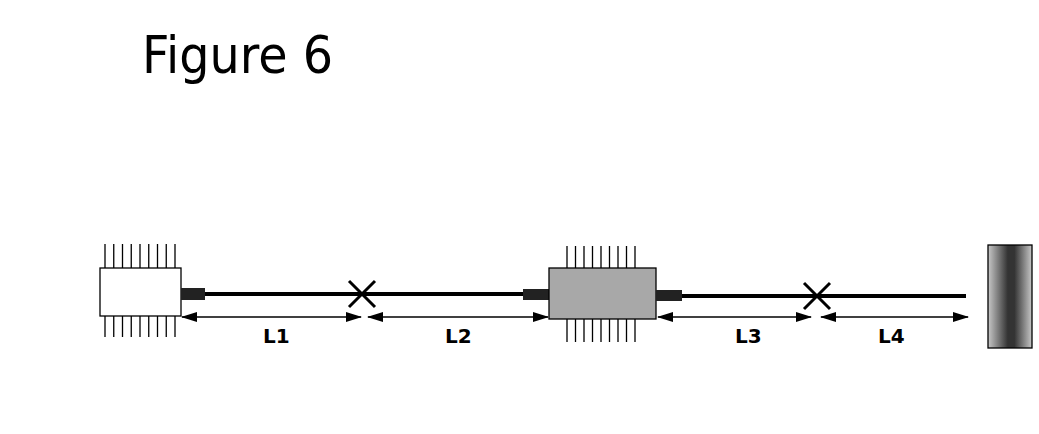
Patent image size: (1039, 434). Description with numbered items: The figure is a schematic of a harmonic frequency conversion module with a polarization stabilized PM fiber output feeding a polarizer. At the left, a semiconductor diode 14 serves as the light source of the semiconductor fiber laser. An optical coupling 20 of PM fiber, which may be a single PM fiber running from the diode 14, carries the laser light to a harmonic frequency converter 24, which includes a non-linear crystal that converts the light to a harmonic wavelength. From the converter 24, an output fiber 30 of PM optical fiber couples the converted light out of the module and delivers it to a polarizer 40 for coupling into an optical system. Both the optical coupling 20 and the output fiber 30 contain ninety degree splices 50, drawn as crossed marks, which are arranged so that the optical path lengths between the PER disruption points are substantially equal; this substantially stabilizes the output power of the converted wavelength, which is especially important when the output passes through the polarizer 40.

The semiconductor diode 14 is at (147, 305).
The optical coupling 20 is at (452, 293).
The harmonic frequency converter 24 is at (587, 308).
The output fiber 30 is at (722, 295).
The polarizer 40 is at (1003, 245).
The 90 degree splices 50 is at (362, 290).